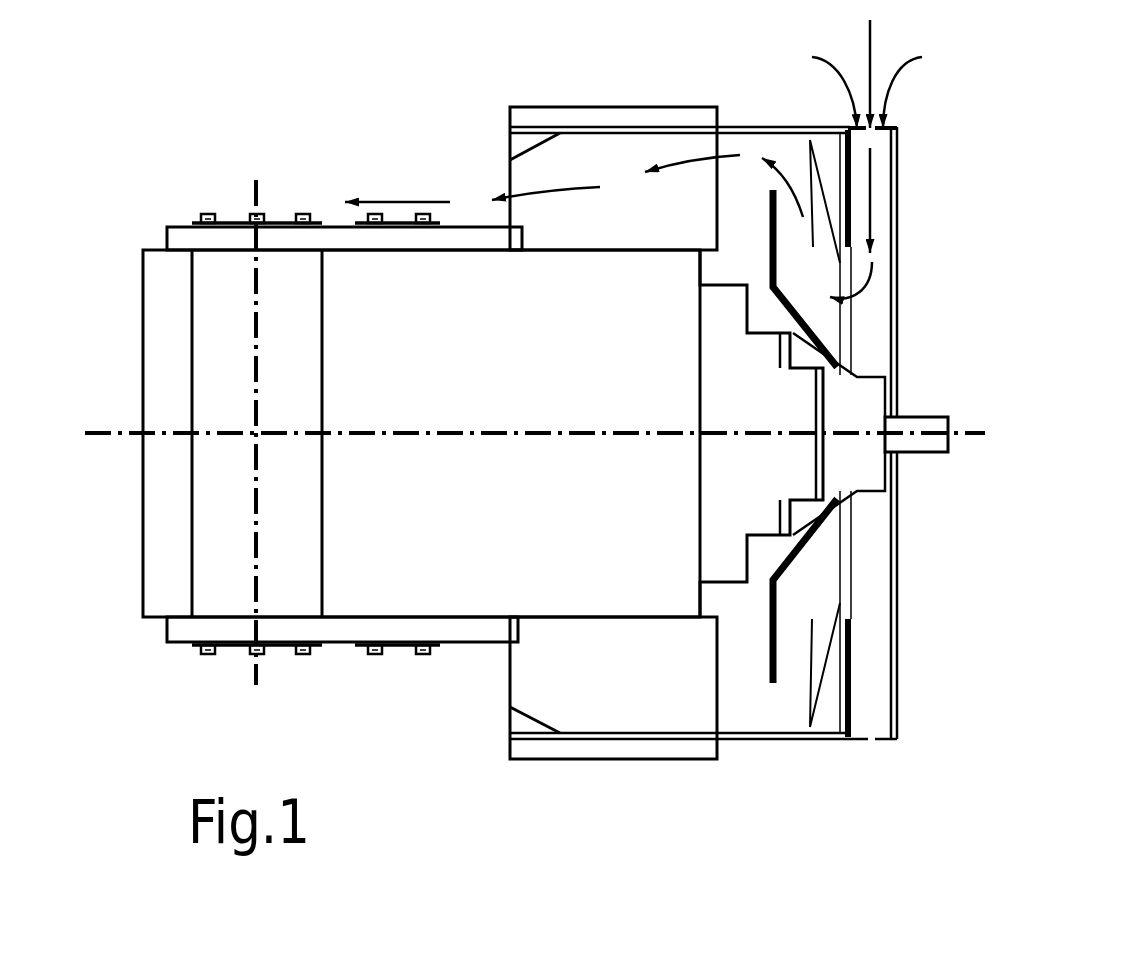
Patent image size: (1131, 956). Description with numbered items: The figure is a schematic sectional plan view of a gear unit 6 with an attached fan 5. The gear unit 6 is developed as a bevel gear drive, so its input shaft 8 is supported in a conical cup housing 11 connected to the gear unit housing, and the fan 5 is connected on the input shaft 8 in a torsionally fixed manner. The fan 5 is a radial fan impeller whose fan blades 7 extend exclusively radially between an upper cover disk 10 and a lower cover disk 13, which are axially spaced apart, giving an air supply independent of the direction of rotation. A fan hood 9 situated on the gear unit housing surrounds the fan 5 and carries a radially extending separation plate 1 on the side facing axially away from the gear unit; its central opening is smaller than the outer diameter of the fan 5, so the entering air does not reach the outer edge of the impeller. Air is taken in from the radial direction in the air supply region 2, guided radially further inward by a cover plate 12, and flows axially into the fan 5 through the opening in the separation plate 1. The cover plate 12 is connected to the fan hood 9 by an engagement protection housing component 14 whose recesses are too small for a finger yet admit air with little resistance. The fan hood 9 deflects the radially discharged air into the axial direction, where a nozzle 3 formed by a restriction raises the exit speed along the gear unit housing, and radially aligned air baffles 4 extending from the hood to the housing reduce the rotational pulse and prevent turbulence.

The separation plate 1 is at (845, 672).
The air supply region 2 is at (943, 117).
The nozzle 3 is at (533, 147).
The air baffle 4 is at (683, 192).
The fan 5 is at (825, 535).
The gear unit 6 is at (436, 313).
The fan blade 7 is at (787, 307).
The input shaft 8 is at (942, 428).
The fan hood 9 is at (757, 732).
The upper cover disk 10 is at (822, 710).
The conical cup housing 11 is at (722, 530).
The cover plate 12 is at (900, 165).
The lower cover disk 13 is at (777, 600).
The engagement protection housing component 14 is at (872, 743).